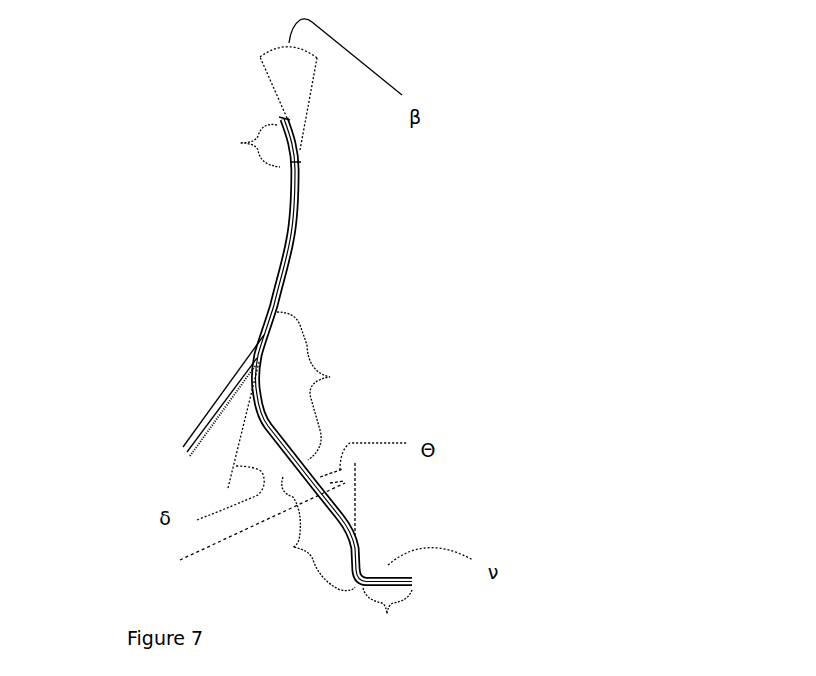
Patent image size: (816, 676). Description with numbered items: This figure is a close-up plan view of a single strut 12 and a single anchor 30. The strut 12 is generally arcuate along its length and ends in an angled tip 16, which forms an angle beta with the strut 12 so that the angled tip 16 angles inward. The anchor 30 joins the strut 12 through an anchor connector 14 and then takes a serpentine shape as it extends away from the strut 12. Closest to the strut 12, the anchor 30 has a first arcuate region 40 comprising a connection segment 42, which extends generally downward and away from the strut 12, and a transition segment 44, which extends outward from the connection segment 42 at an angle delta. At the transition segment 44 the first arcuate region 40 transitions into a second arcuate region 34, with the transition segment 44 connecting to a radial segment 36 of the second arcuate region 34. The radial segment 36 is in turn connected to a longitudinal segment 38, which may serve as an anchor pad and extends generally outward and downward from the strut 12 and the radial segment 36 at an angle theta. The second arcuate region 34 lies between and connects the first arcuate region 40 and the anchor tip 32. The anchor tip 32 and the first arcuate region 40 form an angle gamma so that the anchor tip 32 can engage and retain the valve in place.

The anchor 30 is at (154, 153).
The strut 12 is at (204, 276).
The anchor connector 14 is at (312, 303).
The angled tip 16 is at (246, 142).
The anchor tip 32 is at (387, 618).
The second arcuate region 34 is at (299, 534).
The radial segment 36 is at (241, 526).
The longitudinal segment 38 is at (320, 557).
The first arcuate region 40 is at (327, 386).
The connection segment 42 is at (290, 377).
The transition segment 44 is at (313, 437).